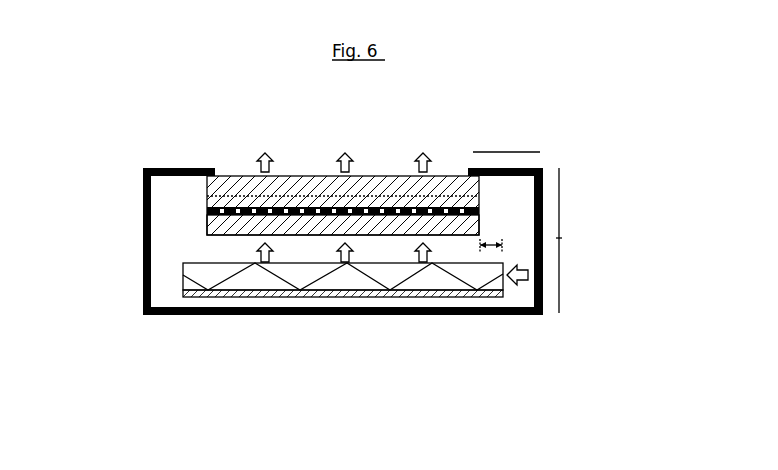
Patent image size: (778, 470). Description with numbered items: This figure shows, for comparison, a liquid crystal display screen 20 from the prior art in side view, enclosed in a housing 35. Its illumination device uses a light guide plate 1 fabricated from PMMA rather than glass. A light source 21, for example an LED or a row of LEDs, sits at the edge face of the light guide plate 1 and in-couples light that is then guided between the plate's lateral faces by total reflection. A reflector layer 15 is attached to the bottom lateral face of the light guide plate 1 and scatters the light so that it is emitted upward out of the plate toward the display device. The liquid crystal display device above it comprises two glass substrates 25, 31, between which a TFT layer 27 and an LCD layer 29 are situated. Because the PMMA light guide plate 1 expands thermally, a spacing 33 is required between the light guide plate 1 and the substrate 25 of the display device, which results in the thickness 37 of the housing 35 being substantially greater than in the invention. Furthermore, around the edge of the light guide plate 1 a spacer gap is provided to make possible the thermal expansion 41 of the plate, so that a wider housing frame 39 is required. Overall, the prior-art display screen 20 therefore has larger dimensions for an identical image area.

The light guide plate 1 is at (183, 272).
The reflector layer 15 is at (143, 310).
The display screen 20 is at (348, 345).
The light source 21 is at (521, 286).
The substrate 25 is at (207, 230).
The TFT layer 27 is at (207, 211).
The LCD layer 29 is at (207, 196).
The substrate 31 is at (206, 177).
The spacing 33 is at (204, 247).
The housing 35 is at (424, 312).
The thickness 37 is at (575, 240).
The housing frame 39 is at (506, 138).
The thermal expansion 41 is at (485, 252).